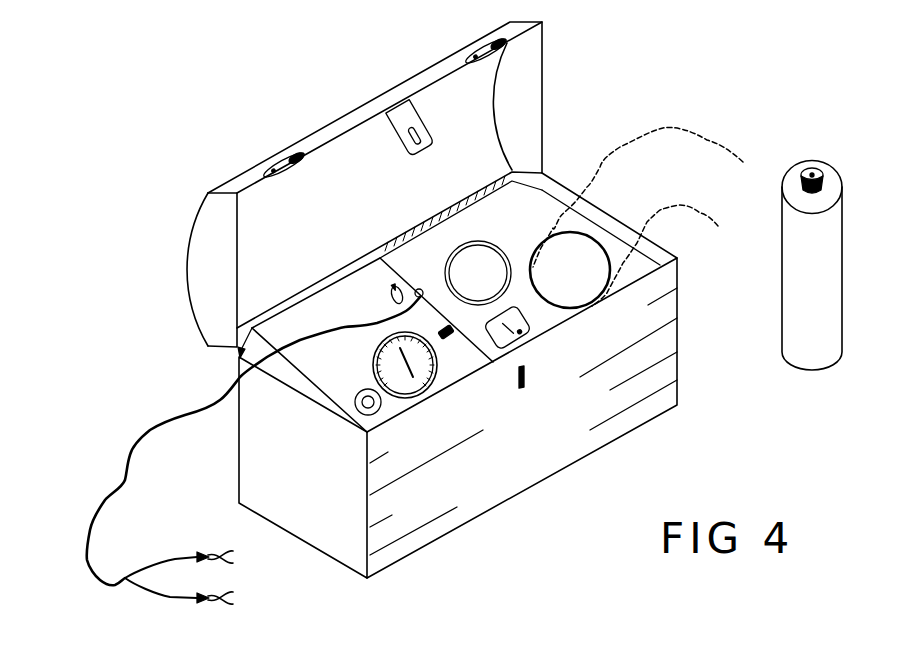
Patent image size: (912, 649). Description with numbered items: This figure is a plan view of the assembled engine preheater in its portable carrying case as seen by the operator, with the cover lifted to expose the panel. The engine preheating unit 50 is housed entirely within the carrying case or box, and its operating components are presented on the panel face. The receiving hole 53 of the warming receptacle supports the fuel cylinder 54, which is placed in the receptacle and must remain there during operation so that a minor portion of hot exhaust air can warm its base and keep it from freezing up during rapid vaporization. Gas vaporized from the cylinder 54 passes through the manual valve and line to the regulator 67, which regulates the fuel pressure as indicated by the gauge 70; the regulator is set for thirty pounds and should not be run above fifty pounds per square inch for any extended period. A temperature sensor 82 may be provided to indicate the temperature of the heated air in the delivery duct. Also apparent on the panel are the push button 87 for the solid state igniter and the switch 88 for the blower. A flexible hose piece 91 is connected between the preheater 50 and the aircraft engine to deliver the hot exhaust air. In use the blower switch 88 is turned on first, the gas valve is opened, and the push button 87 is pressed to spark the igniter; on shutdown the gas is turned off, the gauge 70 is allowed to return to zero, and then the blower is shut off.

The engine preheating unit 50 is at (346, 58).
The receiving hole 53 is at (511, 258).
The fuel cylinder 54 is at (782, 275).
The regulator 67 is at (363, 414).
The gauge 70 is at (375, 361).
The temperature sensor 82 is at (532, 322).
The push button 87 is at (454, 338).
The switch 88 is at (388, 296).
The flexible hose piece 91 is at (707, 138).